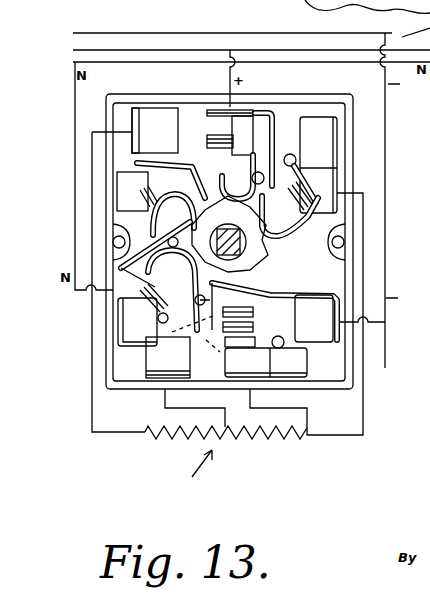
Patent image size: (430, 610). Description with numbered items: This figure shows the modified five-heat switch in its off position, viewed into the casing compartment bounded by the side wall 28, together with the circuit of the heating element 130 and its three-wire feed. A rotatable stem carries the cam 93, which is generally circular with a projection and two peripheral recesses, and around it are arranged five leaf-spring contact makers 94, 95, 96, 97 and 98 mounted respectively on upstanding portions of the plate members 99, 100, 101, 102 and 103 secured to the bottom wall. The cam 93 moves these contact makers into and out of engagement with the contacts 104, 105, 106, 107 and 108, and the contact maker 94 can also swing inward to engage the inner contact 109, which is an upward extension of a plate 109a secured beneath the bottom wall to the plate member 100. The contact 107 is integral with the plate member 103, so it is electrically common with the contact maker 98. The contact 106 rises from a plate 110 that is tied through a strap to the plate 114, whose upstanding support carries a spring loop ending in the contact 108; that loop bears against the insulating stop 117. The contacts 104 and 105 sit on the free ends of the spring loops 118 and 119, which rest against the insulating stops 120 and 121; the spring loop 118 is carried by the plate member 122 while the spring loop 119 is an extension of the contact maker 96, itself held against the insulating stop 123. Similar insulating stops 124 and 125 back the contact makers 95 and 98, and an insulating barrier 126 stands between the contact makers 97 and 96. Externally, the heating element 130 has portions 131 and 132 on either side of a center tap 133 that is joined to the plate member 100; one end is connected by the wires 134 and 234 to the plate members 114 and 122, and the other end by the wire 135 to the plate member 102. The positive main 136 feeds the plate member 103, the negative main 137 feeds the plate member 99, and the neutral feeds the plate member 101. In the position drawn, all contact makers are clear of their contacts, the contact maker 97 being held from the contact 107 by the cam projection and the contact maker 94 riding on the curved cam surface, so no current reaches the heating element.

The positive main 136 is at (166, 32).
The side wall 28 is at (354, 120).
The plate 110 is at (116, 172).
The plate member 102 is at (156, 118).
The contact 107 is at (207, 150).
The plate member 103 is at (246, 127).
The negative main 137 is at (355, 70).
The contact maker 98 is at (268, 158).
The contact maker 97 is at (240, 185).
The plate 114 is at (324, 182).
The insulating stop 117 is at (296, 158).
The contact 108 is at (342, 188).
The insulating stop 125 is at (290, 216).
The insulating barrier 126 is at (142, 172).
The contact 106 is at (140, 202).
The contact maker 96 is at (174, 237).
The cam 93 is at (250, 262).
The insulating stop 123 is at (155, 254).
The contact maker 95 is at (197, 298).
The contact 105 is at (156, 289).
The insulating stop 121 is at (177, 310).
The plate member 101 is at (137, 322).
The spring loop 119 is at (116, 341).
The plate member 100 is at (168, 357).
The insulating stop 124 is at (198, 334).
The contact maker 94 is at (282, 292).
The contact 109 is at (240, 309).
The contact 104 is at (255, 340).
The insulating stop 120 is at (282, 340).
The plate 109a is at (226, 362).
The plate member 122 is at (266, 362).
The spring loop 118 is at (308, 368).
The plate member 99 is at (322, 331).
The center tap 133 is at (180, 408).
The wire 234 is at (305, 410).
The wire 134 is at (350, 437).
The wire 135 is at (112, 434).
The heating element portion 132 is at (172, 440).
The heating element portion 131 is at (268, 441).
The heating element 130 is at (182, 475).